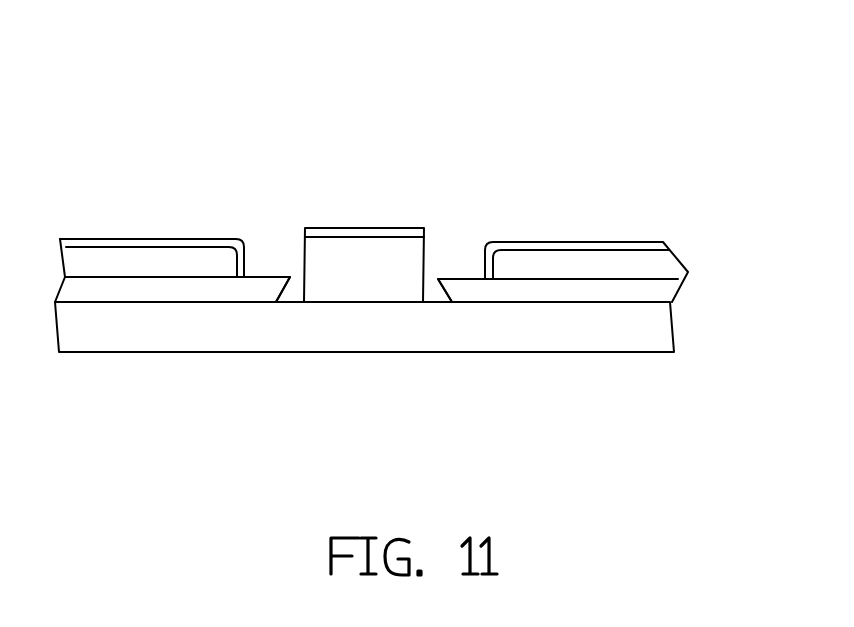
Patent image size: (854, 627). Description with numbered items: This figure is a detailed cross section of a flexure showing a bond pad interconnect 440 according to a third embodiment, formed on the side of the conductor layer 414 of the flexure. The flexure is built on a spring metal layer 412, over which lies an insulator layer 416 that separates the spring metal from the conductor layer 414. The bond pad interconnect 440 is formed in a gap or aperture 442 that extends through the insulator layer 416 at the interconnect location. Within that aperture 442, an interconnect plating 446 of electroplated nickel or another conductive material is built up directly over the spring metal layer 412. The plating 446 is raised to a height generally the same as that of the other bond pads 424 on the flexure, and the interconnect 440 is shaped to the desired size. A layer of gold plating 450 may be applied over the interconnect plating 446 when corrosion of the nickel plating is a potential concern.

The spring metal layer 412 is at (600, 330).
The conductor layer 414 is at (650, 265).
The insulator layer 416 is at (660, 293).
The bond pads 424 is at (110, 260).
The bond pad interconnect 440 is at (429, 204).
The aperture 442 is at (273, 238).
The interconnect plating 446 is at (348, 253).
The gold plating 450 is at (177, 239).